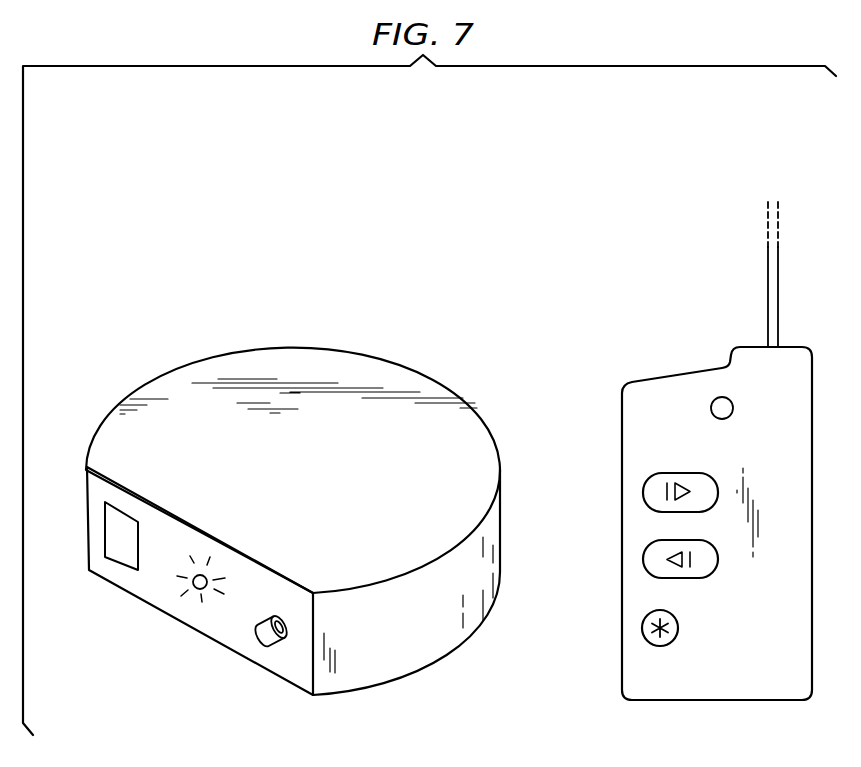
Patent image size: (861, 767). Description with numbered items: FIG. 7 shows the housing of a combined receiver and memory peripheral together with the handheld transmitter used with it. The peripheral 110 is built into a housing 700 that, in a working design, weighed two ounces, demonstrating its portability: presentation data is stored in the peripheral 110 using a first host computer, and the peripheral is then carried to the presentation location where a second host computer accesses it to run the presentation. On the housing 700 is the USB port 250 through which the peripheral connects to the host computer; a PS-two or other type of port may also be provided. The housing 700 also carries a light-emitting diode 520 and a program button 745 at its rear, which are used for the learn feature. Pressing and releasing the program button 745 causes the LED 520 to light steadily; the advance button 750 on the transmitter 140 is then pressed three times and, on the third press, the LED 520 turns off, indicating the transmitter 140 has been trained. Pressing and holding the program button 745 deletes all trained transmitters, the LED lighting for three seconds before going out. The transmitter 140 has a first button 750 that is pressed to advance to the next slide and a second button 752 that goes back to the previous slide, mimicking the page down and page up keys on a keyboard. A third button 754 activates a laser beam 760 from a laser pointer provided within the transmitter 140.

The peripheral 110 is at (263, 485).
The housing 700 is at (158, 380).
The USB port 250 is at (113, 545).
The light-emitting diode (LED) 520 is at (198, 592).
The program button 745 is at (270, 642).
The transmitter 140 is at (680, 451).
The laser beam 760 is at (768, 266).
The first button 750 is at (643, 487).
The second button 752 is at (643, 556).
The third button 754 is at (645, 630).